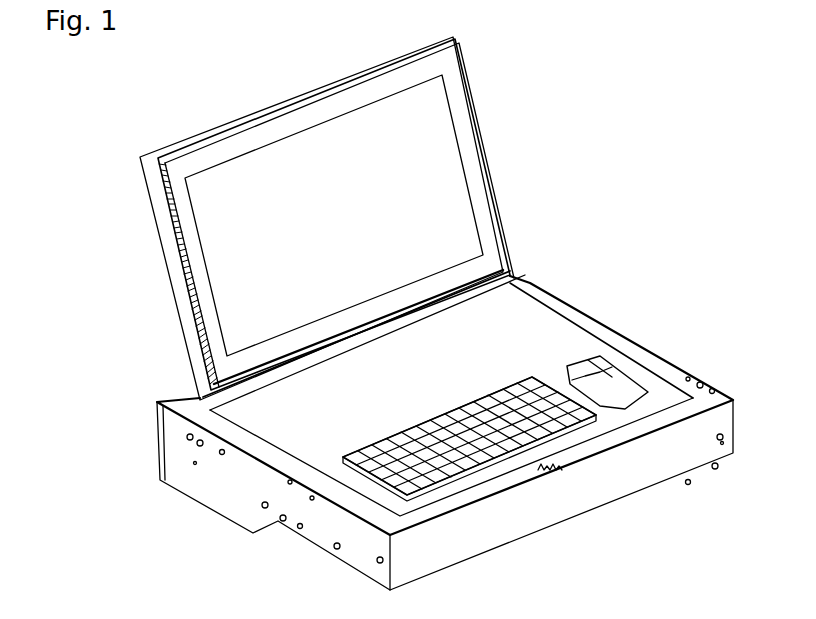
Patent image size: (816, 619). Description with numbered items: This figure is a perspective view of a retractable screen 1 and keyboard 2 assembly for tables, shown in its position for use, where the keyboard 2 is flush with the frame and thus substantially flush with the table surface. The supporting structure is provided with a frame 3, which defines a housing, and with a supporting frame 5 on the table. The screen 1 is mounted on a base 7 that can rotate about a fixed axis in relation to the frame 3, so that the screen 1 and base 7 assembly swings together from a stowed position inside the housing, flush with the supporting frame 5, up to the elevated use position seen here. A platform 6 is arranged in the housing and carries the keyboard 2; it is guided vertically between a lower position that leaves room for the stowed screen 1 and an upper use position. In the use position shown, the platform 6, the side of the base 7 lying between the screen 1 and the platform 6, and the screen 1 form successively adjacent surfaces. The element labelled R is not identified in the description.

The screen 1 is at (349, 218).
The keyboard 2 is at (482, 488).
The frame 3 is at (445, 438).
The supporting frame 5 is at (451, 366).
The platform 6 is at (601, 328).
The base 7 is at (394, 304).
The mouse pointing device R is at (658, 364).